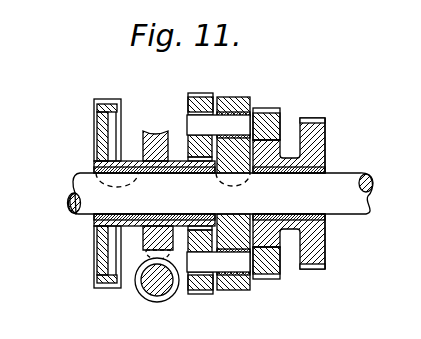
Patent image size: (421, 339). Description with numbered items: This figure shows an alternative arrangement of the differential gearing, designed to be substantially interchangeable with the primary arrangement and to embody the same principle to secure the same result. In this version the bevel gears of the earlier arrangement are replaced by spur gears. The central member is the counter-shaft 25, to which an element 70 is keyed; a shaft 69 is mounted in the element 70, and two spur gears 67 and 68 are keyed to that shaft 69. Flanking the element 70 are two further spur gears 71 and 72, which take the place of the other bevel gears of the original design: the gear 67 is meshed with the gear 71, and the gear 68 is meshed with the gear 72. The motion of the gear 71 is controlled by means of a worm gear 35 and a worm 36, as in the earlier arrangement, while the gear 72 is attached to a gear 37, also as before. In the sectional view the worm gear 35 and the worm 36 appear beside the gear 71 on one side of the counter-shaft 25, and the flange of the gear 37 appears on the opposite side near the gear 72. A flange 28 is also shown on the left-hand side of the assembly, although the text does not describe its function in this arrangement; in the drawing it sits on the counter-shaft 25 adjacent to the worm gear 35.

The counter-shaft 25 is at (221, 193).
The flange 28 is at (96, 110).
The worm gear 35 is at (145, 248).
The worm 36 is at (141, 285).
The gear 37 is at (326, 133).
The spur gear 67 is at (196, 94).
The spur gear 68 is at (277, 109).
The shaft 69 is at (236, 122).
The element 70 is at (227, 108).
The spur gear 71 is at (186, 150).
The spur gear 72 is at (284, 140).